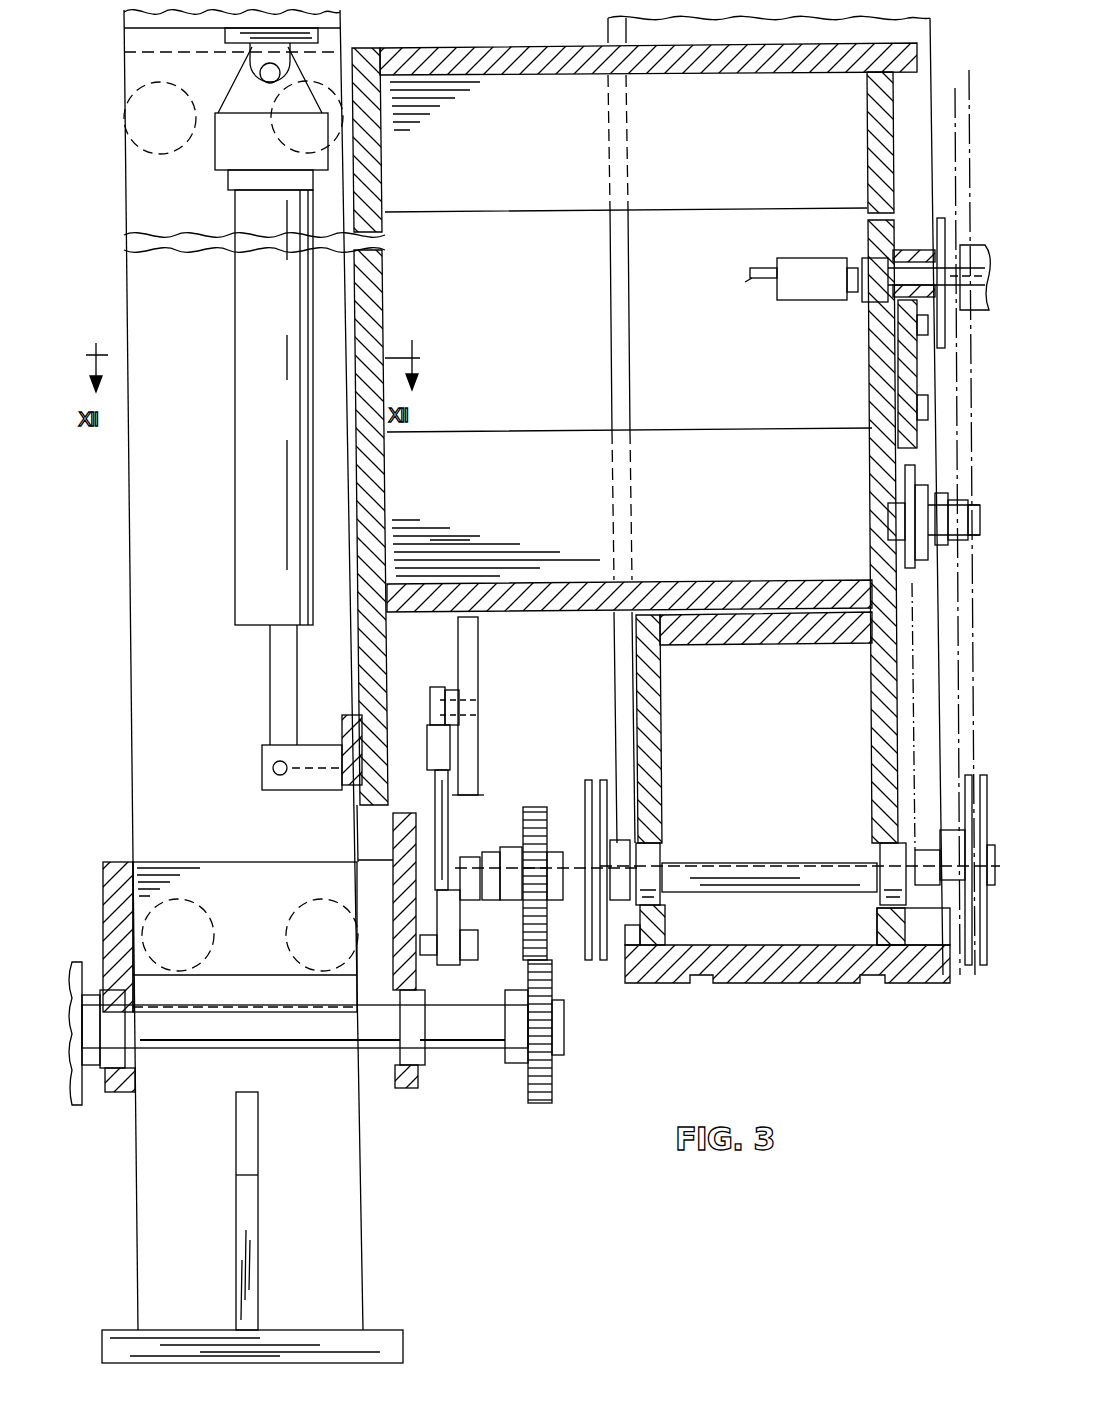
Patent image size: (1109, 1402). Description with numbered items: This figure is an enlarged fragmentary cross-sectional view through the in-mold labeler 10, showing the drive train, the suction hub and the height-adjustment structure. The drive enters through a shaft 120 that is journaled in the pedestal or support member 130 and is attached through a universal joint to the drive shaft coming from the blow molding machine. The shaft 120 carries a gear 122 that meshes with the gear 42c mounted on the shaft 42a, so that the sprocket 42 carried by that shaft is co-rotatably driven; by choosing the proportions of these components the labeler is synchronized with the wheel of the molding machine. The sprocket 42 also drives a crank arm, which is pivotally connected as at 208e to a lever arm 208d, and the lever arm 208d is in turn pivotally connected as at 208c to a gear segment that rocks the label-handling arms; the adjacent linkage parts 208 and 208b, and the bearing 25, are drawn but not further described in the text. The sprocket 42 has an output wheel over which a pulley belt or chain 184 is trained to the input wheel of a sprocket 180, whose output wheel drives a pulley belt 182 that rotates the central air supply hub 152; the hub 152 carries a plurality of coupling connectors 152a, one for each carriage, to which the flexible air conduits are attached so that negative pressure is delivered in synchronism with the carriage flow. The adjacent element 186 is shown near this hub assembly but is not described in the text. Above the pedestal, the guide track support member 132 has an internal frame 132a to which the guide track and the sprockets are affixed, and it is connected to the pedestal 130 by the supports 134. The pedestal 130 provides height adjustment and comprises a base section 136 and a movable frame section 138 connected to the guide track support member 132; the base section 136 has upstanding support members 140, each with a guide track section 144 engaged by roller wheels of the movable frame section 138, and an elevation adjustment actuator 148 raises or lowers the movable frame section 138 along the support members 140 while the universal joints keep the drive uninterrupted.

The in-mold labeler 10 is at (790, 988).
The bearing 25 is at (663, 873).
The sprocket 42 is at (578, 830).
The shaft 42a is at (786, 868).
The gear 42c is at (543, 827).
The shaft 120 is at (87, 993).
The gear 122 is at (550, 977).
The pedestal 130 is at (368, 1155).
The guide track support member 132 is at (665, 988).
The internal frame 132a is at (875, 670).
The supports 134 is at (518, 48).
The base section 136 is at (365, 1294).
The movable frame section 138 is at (115, 870).
The upstanding support member 140 is at (138, 1190).
The guide track section 144 is at (350, 485).
The elevation adjustment actuator 148 is at (237, 405).
The central air supply hub 152 is at (945, 248).
The coupling connectors 152a is at (747, 278).
The sprocket 180 is at (912, 362).
The pulley belt 182 is at (958, 378).
The pulley belt 184 is at (965, 695).
The pulley 186 is at (978, 535).
The rod 208 is at (482, 748).
The rod end block 208b is at (477, 932).
The pivot connection 208c is at (450, 690).
The lever arm 208d is at (445, 830).
The pivot connection 208e is at (425, 932).